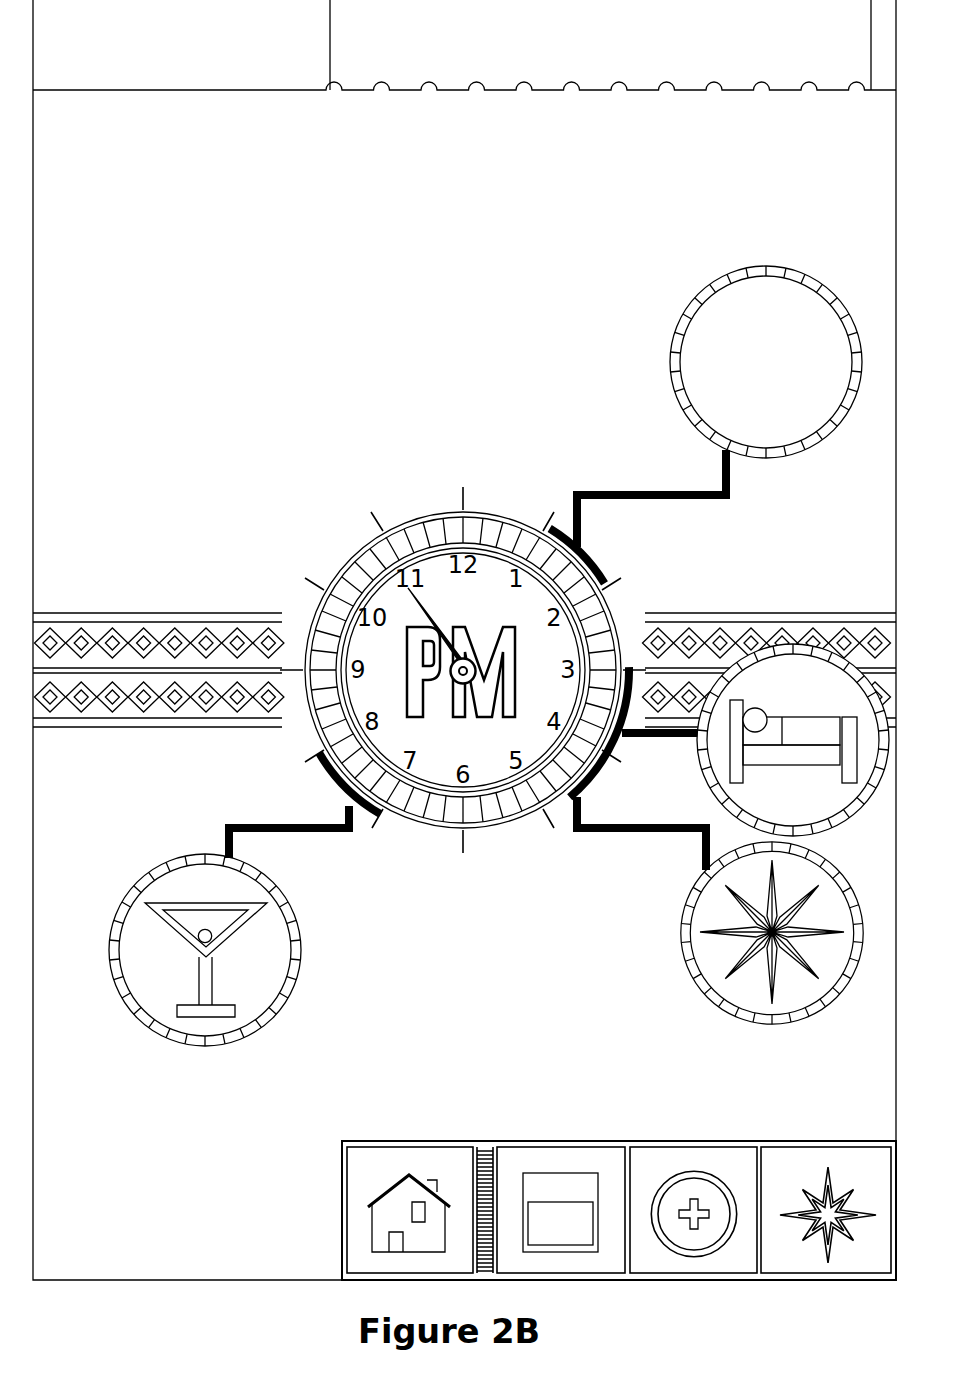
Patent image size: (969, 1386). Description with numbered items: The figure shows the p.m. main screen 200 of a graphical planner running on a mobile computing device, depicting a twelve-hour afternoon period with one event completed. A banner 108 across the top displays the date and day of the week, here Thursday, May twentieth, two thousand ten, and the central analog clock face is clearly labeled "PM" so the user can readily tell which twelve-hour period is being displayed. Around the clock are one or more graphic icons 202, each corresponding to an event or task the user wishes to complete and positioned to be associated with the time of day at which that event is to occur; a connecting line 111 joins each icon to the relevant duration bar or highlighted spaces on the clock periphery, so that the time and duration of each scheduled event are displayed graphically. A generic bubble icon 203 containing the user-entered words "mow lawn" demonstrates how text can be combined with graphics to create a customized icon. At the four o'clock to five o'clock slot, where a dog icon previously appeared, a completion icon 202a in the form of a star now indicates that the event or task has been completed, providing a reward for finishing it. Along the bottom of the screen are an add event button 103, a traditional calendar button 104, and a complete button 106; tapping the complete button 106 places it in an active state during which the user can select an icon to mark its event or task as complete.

The p.m. main screen 200 is at (256, 320).
The banner 108 is at (537, 60).
The connecting line 111 is at (640, 492).
The generic bubble icon 203 is at (716, 338).
The graphic icon 202 is at (792, 688).
The completion icon 202a is at (715, 947).
The traditional calendar button 104 is at (560, 1165).
The add event button 103 is at (690, 1165).
The complete button 106 is at (830, 1165).